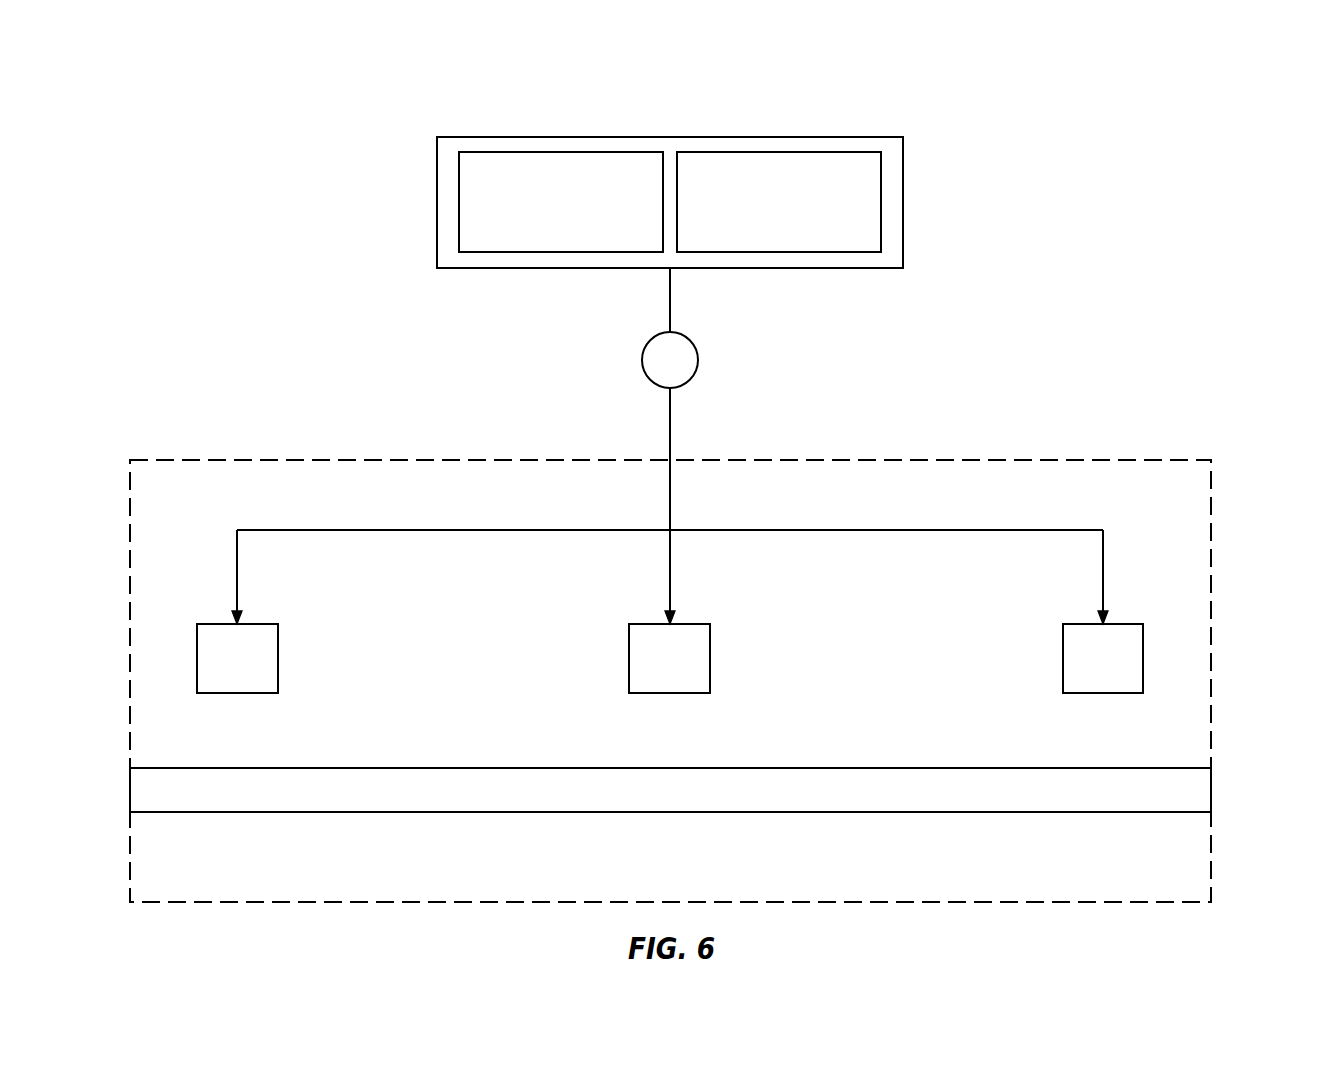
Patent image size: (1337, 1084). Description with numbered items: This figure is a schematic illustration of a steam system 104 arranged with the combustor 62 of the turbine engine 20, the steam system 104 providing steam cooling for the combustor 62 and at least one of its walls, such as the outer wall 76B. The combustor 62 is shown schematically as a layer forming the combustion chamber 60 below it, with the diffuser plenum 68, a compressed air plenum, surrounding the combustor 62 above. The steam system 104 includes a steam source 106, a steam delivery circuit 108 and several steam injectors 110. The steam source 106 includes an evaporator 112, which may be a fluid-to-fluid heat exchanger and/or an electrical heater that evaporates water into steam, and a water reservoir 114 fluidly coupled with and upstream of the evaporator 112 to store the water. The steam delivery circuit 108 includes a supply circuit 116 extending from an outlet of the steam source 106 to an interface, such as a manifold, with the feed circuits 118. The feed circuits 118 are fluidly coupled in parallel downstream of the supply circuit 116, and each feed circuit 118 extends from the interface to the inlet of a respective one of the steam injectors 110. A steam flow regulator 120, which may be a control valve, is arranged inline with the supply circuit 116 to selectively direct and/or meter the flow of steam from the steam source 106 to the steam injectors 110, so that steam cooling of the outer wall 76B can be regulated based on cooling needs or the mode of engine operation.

The turbine engine 20 is at (1152, 197).
The steam system 104 is at (729, 186).
The steam source 106 is at (676, 116).
The steam delivery circuit 108 is at (750, 356).
The steam injectors 110 is at (217, 675).
The evaporator 112 is at (542, 232).
The water reservoir 114 is at (760, 232).
The supply circuit 116 is at (702, 423).
The feed circuits 118 is at (258, 575).
The steam flow regulator 120 is at (641, 362).
The combustor 62 is at (1167, 749).
The diffuser plenum 68 is at (427, 687).
The combustion chamber 60 is at (415, 879).
The outer wall 76B is at (1211, 792).